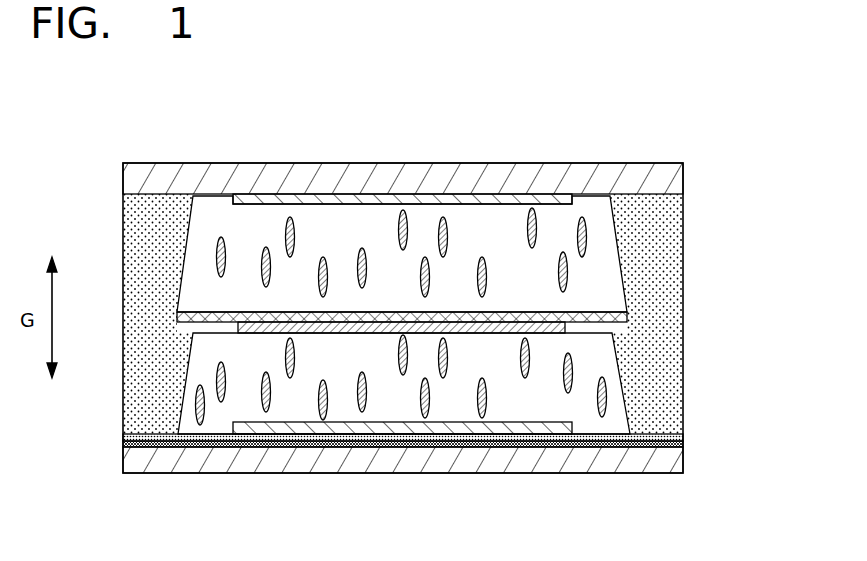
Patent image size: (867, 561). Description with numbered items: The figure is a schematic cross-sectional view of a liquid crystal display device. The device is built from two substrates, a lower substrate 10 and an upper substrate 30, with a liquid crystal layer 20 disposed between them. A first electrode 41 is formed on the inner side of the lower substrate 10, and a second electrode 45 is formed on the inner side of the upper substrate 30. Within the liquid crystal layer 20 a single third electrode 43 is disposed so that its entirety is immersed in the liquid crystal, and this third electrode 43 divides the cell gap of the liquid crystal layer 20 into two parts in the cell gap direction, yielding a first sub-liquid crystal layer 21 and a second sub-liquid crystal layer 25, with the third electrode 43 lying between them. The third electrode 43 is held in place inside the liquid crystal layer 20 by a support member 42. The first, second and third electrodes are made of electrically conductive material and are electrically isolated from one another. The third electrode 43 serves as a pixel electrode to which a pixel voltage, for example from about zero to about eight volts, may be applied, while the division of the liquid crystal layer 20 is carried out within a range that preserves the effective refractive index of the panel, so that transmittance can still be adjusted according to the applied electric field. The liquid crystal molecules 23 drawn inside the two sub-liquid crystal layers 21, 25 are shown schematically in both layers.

The lower substrate 10 is at (670, 462).
The upper substrate 30 is at (665, 178).
The liquid crystal layer 20 is at (432, 315).
The first sub-liquid crystal layer 21 is at (610, 368).
The second sub-liquid crystal layer 25 is at (610, 285).
The liquid crystal molecules 23 is at (587, 240).
The first electrode 41 is at (572, 430).
The second electrode 45 is at (574, 200).
The support member 42 is at (177, 318).
The third electrode 43 is at (190, 333).